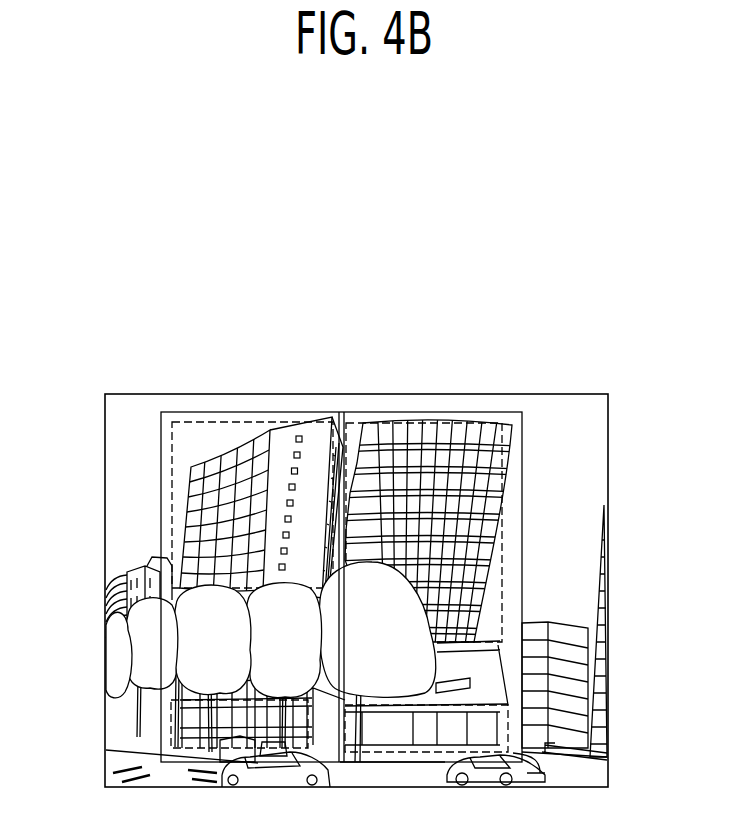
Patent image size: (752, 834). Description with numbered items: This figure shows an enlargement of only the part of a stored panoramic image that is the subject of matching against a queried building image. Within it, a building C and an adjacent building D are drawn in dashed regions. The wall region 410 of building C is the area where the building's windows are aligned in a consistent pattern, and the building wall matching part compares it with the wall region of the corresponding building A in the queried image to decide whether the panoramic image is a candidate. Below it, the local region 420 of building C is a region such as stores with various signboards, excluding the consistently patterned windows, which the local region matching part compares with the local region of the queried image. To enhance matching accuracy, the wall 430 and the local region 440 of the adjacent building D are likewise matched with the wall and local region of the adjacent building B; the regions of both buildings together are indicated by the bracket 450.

The wall region 410 is at (503, 530).
The local region 420 is at (508, 736).
The wall 430 is at (172, 503).
The local region 440 is at (172, 730).
The combined image of regions C and D 450 is at (457, 412).